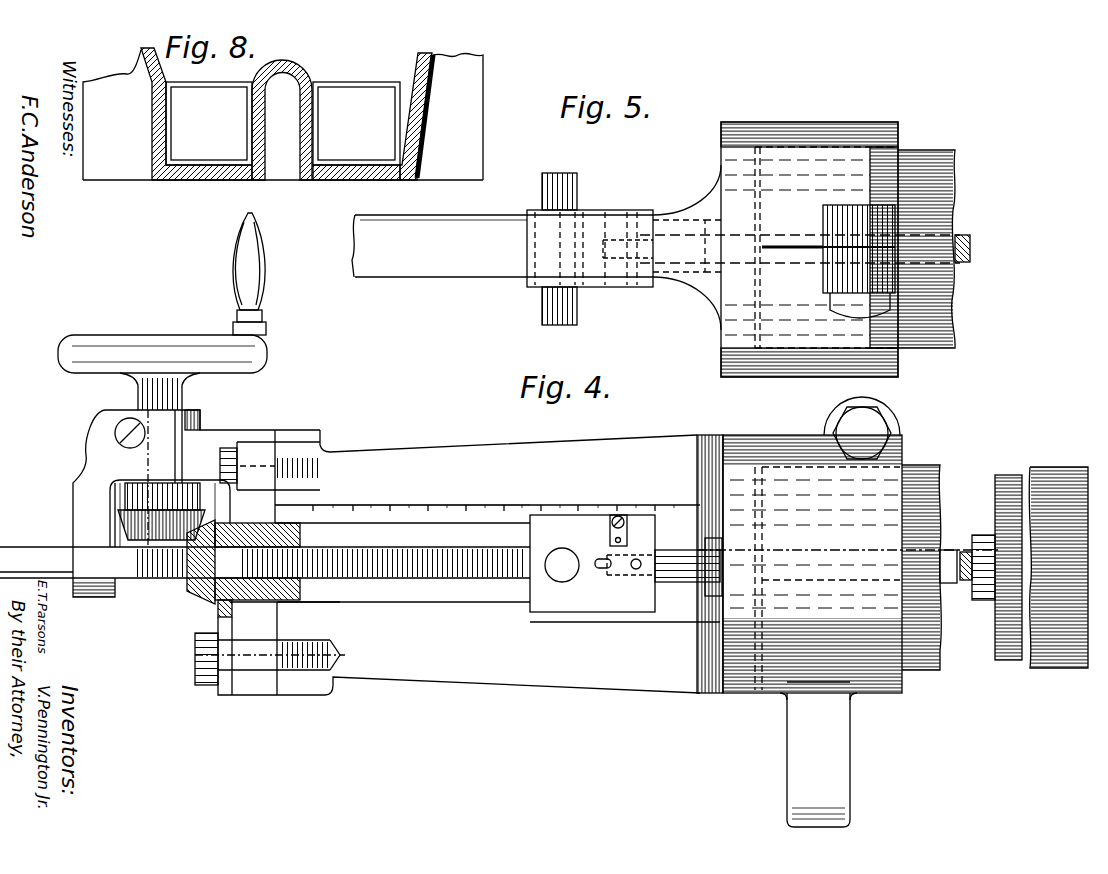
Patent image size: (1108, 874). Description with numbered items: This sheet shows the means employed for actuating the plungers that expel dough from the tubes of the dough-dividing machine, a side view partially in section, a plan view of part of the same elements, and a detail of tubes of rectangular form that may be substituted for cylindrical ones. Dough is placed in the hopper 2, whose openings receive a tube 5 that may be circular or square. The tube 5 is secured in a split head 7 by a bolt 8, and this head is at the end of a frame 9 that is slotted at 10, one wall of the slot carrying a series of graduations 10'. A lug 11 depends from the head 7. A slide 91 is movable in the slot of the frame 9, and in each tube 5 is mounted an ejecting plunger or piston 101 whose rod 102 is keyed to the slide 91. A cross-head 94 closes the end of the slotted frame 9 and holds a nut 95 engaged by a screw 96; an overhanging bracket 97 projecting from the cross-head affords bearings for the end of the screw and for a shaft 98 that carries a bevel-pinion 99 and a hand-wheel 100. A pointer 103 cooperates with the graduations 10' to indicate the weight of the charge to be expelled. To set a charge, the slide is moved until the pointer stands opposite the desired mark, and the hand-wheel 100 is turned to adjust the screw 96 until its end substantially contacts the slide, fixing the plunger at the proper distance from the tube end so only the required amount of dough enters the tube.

In FIG. 8, the hopper 2 is at (415, 72).
In FIG. 5, the tube 5 is at (926, 249).
In FIG. 4, the tube 5 is at (1058, 567).
In FIG. 5, the split head 7 is at (800, 249).
In FIG. 4, the split head 7 is at (848, 567).
In FIG. 5, the bolt 8 is at (852, 205).
In FIG. 4, the bolt 8 is at (862, 428).
In FIG. 5, the frame 9 is at (502, 246).
In FIG. 4, the frame 9 is at (460, 476).
In FIG. 4, the slot 10 is at (265, 563).
In FIG. 4, the graduations 10' is at (402, 494).
In FIG. 4, the lug 11 is at (823, 768).
In FIG. 5, the slide 91 is at (633, 290).
In FIG. 4, the slide 91 is at (600, 592).
In FIG. 4, the cross-head 94 is at (260, 682).
In FIG. 4, the nut 95 is at (262, 592).
In FIG. 4, the screw 96 is at (172, 560).
In FIG. 4, the overhanging bracket 97 is at (90, 482).
In FIG. 4, the shaft 98 is at (185, 390).
In FIG. 4, the bevel-pinion 99 is at (118, 527).
In FIG. 4, the hand-wheel 100 is at (120, 348).
In FIG. 4, the ejecting plunger or piston 101 is at (1005, 480).
In FIG. 5, the rod 102 is at (960, 265).
In FIG. 4, the rod 102 is at (695, 568).
In FIG. 4, the pointer 103 is at (621, 514).